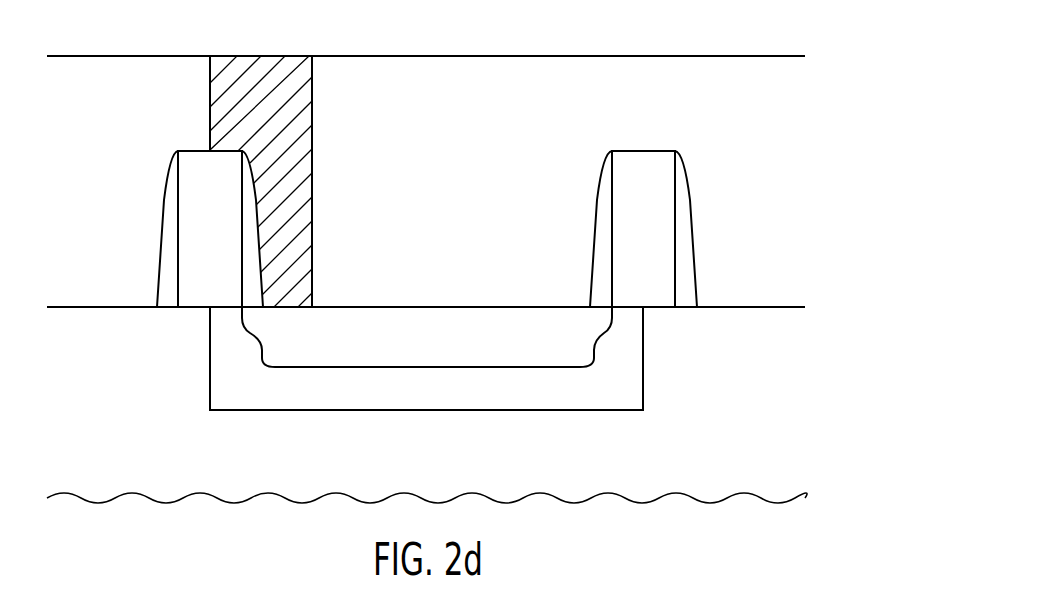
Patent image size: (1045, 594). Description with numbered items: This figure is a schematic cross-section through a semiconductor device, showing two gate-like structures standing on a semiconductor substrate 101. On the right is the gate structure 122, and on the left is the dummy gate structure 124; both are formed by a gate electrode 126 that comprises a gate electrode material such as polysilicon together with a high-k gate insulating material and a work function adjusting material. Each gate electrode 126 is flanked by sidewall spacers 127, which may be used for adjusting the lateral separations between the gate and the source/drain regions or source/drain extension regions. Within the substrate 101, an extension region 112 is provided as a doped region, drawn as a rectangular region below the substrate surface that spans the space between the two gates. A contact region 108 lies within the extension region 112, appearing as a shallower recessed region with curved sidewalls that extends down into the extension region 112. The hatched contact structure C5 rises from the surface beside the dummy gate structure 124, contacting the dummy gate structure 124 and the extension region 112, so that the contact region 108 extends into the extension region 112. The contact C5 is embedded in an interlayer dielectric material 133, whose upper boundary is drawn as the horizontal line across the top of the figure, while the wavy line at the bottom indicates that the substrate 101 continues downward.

The interlayer dielectric material 133 is at (784, 56).
The contact structure C5 is at (332, 111).
The dummy gate structure 124 is at (162, 155).
The gate structure 122 is at (688, 155).
The gate electrode 126 is at (232, 264).
The sidewall spacers 127 is at (163, 221).
The contact region 108 is at (449, 353).
The extension region 112 is at (643, 377).
The semiconductor substrate 101 is at (449, 465).